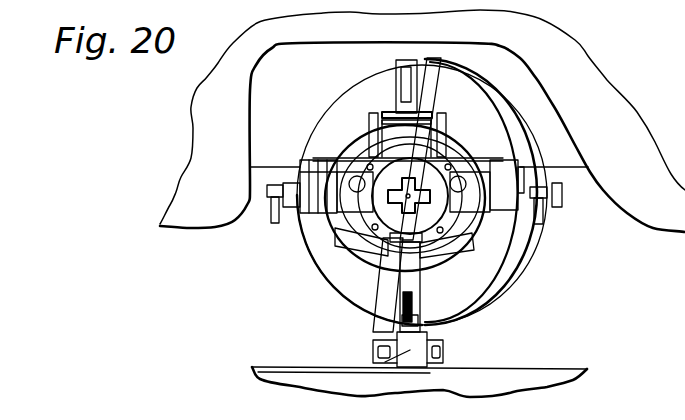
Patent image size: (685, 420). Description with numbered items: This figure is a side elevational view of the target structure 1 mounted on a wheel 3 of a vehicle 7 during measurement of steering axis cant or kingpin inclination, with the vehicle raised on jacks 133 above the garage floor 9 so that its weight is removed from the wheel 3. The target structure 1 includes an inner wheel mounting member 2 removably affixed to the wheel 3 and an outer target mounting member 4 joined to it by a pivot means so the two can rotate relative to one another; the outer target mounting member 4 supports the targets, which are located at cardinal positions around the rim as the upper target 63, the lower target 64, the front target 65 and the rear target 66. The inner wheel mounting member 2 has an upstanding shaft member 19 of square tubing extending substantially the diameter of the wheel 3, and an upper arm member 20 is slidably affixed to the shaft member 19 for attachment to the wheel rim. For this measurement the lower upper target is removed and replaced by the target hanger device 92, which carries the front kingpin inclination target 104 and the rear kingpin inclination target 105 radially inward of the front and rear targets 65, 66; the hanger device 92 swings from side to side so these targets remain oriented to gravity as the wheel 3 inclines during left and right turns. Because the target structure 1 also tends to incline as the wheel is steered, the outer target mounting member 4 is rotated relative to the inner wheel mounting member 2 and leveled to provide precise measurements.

The target structure 1 is at (378, 88).
The inner wheel mounting member 2 is at (374, 298).
The wheel 3 is at (340, 92).
The outer target mounting member 4 is at (380, 265).
The vehicle 7 is at (220, 170).
The garage floor 9 is at (544, 368).
The shaft member 19 is at (477, 75).
The upper arm member 20 is at (438, 266).
The upper target 63 is at (400, 84).
The lower target 64 is at (380, 320).
The front target 65 is at (268, 220).
The rear target 66 is at (555, 215).
The target hanger device 92 is at (448, 138).
The front kingpin inclination target 104 is at (310, 230).
The rear kingpin inclination target 105 is at (520, 186).
The jacks 133 is at (432, 337).